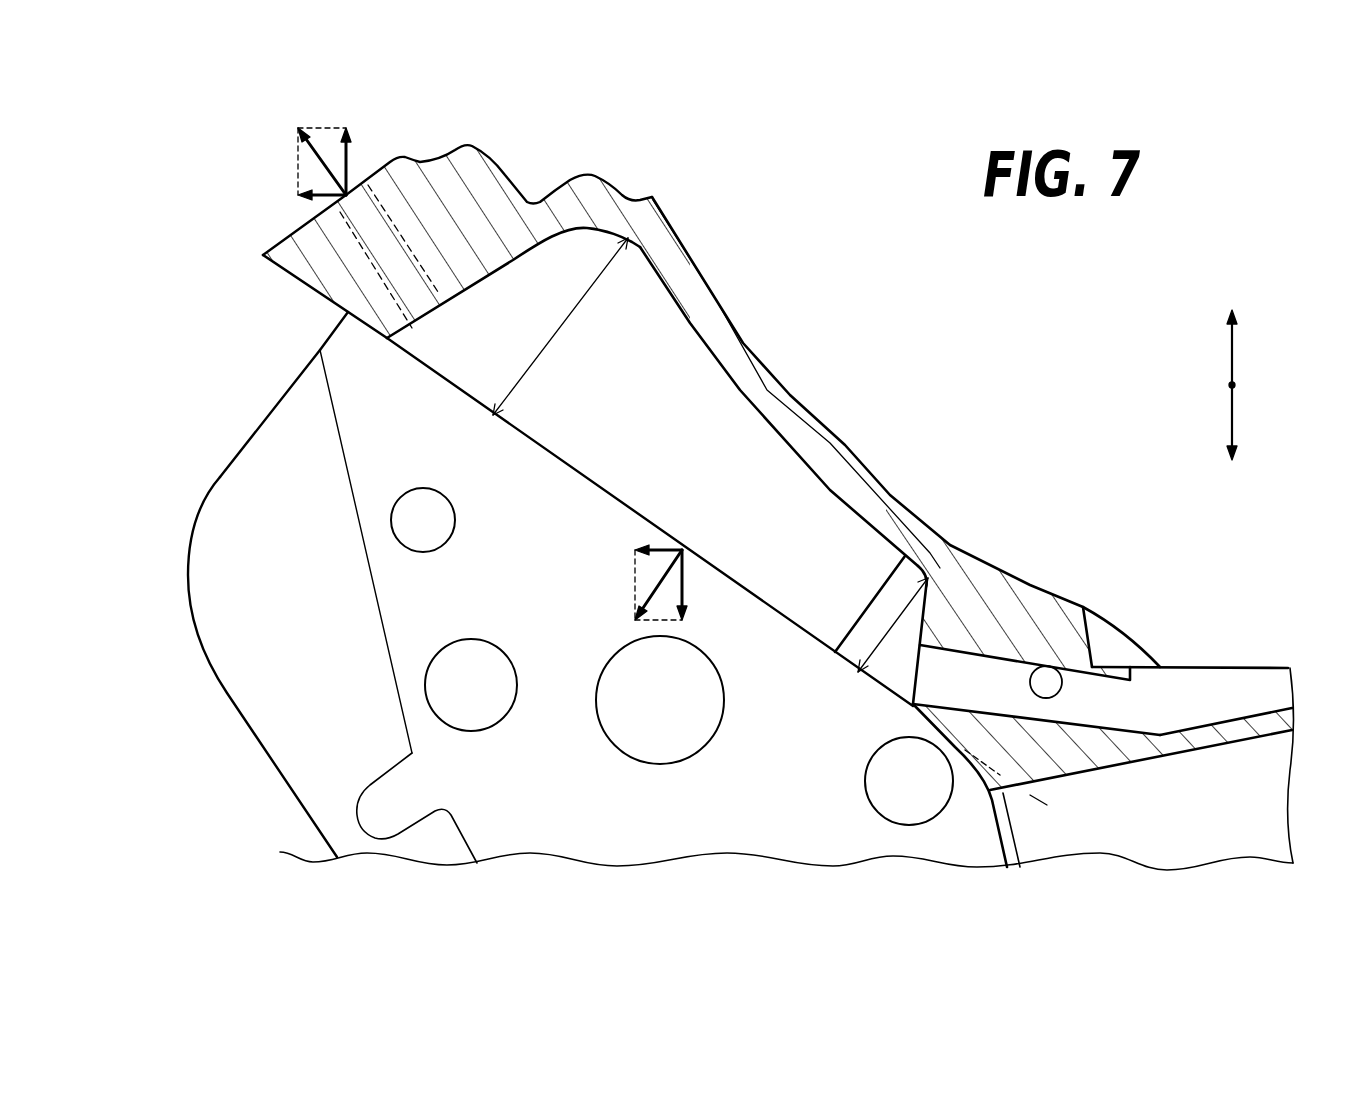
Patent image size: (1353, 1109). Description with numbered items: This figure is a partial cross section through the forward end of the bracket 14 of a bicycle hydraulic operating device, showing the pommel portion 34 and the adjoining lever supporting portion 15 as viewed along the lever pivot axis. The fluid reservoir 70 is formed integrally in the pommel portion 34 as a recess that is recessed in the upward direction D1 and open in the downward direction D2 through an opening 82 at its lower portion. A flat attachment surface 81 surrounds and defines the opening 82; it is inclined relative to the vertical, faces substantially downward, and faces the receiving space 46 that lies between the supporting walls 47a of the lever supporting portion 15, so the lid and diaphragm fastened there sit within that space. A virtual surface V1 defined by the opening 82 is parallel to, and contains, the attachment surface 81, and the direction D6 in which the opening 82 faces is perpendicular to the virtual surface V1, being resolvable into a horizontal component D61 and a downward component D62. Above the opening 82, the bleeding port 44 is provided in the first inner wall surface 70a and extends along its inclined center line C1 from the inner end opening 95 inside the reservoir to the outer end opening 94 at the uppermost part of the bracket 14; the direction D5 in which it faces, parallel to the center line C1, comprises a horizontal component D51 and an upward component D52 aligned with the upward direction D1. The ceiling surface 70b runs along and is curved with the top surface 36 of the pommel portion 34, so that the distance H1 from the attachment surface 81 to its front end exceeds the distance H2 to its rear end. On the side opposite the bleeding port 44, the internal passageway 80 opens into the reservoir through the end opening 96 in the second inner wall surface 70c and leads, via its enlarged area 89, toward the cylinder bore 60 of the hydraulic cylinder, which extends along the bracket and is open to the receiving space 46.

The bracket 14 is at (1080, 432).
The lever supporting portion 15 is at (228, 437).
The pommel portion 34 is at (753, 237).
The top surface 36 is at (733, 327).
The bleeding port 44 is at (375, 262).
The receiving space 46 is at (247, 492).
The supporting wall 47a is at (270, 425).
The cylinder bore 60 is at (1183, 816).
The fluid reservoir 70 is at (787, 470).
The first inner wall surface 70a is at (577, 273).
The ceiling surface 70b is at (730, 380).
The second inner wall surface 70c is at (921, 630).
The internal passageway 80 is at (1062, 670).
The attachment surface 81 is at (340, 347).
The opening 82 is at (548, 458).
The enlarged area 89 is at (1215, 685).
The outer end opening 94 is at (325, 203).
The inner end opening 95 is at (420, 335).
The end opening 96 is at (905, 705).
The center line C1 is at (430, 297).
The upward direction D1 is at (1244, 349).
The downward direction D2 is at (1244, 422).
The direction D5 is at (338, 142).
The horizontal component D51 is at (323, 195).
The upward component D52 is at (348, 160).
The direction D6 is at (650, 580).
The horizontal component D61 is at (650, 542).
The downward component D62 is at (687, 587).
The distance H1 is at (560, 326).
The distance H2 is at (892, 627).
The virtual surface V1 is at (263, 255).